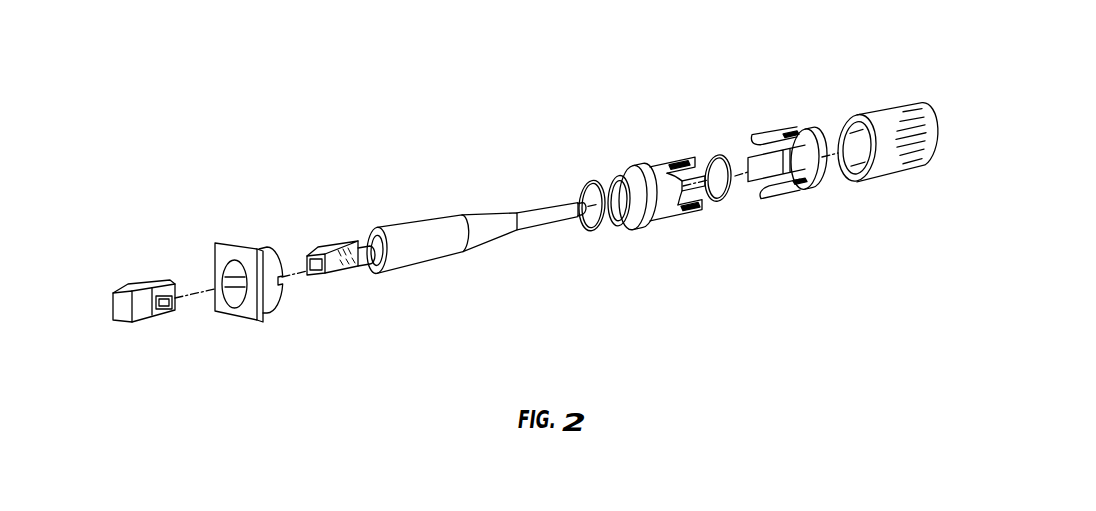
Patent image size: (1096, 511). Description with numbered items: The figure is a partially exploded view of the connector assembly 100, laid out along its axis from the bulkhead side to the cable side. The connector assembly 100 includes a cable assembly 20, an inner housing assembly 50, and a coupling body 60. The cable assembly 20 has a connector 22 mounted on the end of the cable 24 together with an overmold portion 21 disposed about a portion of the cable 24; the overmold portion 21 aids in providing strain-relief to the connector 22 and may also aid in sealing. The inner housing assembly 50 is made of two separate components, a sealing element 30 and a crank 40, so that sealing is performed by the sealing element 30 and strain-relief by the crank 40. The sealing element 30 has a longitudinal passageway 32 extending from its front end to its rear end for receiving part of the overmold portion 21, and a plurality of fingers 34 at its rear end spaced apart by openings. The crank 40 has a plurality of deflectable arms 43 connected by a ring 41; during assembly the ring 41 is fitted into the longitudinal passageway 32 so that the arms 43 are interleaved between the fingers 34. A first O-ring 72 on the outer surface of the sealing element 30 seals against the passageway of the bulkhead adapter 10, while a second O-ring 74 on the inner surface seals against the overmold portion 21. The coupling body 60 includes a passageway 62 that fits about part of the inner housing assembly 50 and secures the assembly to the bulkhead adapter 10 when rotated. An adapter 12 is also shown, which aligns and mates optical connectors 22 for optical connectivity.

The connector assembly 100 is at (283, 170).
The adapter 12 is at (157, 318).
The bulkhead adapter 10 is at (263, 322).
The connector 22 is at (343, 273).
The cable assembly 20 is at (409, 266).
The overmold portion 21 is at (465, 255).
The cable 24 is at (580, 210).
The first O-ring 72 is at (587, 181).
The longitudinal passageway 32 is at (621, 209).
The sealing element 30 is at (658, 216).
The fingers 34 is at (697, 207).
The inner housing assembly 50 is at (747, 208).
The crank 40 is at (792, 191).
The ring 41 is at (822, 143).
The arms 43 is at (790, 138).
The second O-ring 74 is at (718, 154).
The coupling body 60 is at (878, 174).
The passageway 62 is at (847, 167).